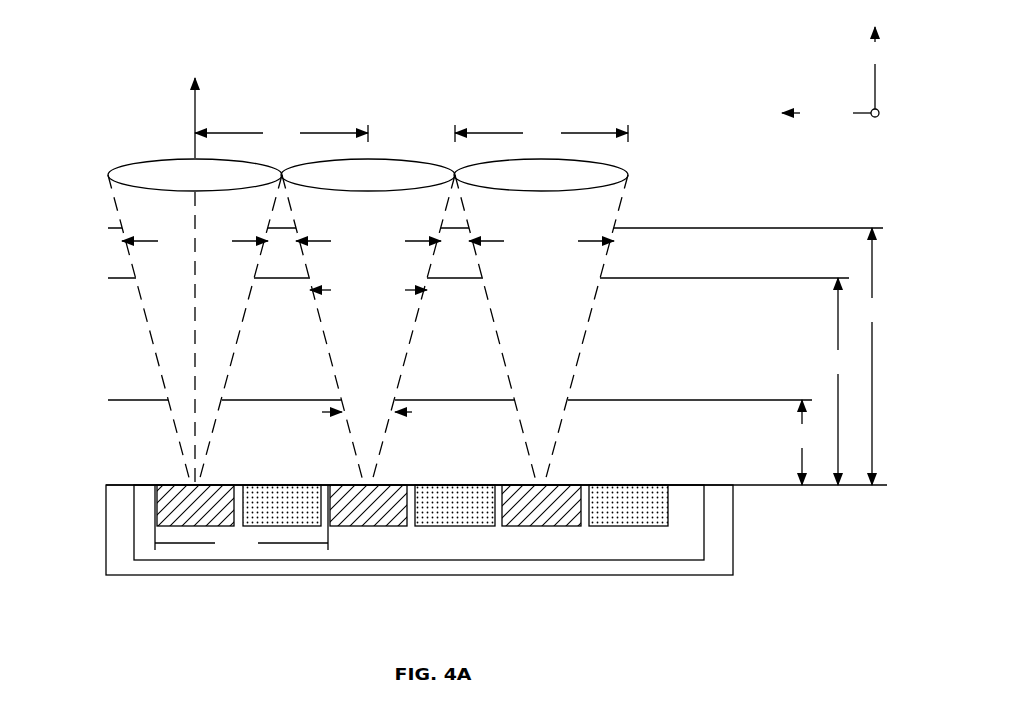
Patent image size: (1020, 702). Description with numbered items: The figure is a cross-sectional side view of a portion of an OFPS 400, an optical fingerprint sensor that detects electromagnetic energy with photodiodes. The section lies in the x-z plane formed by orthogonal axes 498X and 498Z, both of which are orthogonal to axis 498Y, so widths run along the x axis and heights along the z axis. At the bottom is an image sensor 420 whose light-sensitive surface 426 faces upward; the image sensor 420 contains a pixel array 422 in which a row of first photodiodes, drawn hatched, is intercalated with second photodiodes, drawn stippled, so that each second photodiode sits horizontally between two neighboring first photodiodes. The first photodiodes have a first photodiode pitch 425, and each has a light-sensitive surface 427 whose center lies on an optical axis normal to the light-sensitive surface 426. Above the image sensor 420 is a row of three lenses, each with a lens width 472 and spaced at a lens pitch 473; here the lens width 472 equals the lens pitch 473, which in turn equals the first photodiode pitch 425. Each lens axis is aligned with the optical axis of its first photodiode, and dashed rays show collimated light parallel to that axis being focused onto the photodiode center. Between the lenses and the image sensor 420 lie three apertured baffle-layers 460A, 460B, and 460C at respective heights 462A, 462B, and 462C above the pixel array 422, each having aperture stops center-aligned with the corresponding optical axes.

The OFPS 400 is at (112, 96).
The image sensor 420 is at (720, 558).
The pixel array 422 is at (688, 547).
The first photodiode pitch 425 is at (241, 519).
The light-sensitive surface 426 is at (121, 478).
The light-sensitive surface 427 is at (168, 476).
The apertured baffle-layer 460A is at (668, 228).
The apertured baffle-layer 460B is at (668, 278).
The apertured baffle-layer 460C is at (660, 400).
The height 462A is at (870, 356).
The height 462B is at (838, 381).
The height 462C is at (802, 442).
The lens width 472 is at (541, 133).
The lens pitch 473 is at (281, 133).
The axis 498X is at (826, 113).
The axis 498Y is at (871, 109).
The axis 498Z is at (874, 68).